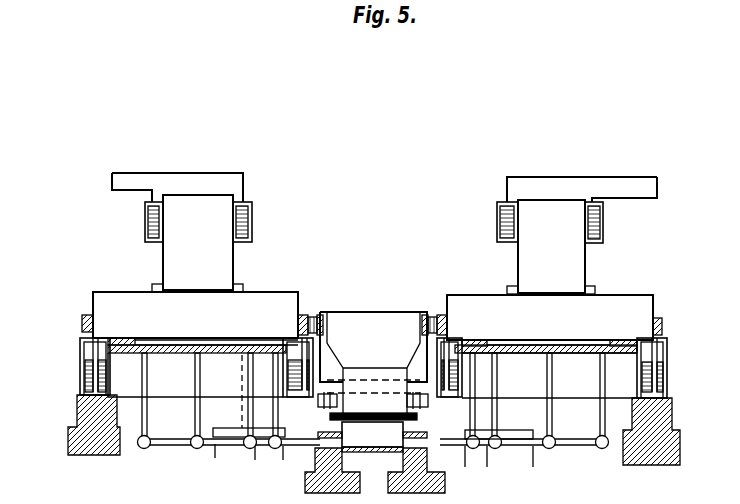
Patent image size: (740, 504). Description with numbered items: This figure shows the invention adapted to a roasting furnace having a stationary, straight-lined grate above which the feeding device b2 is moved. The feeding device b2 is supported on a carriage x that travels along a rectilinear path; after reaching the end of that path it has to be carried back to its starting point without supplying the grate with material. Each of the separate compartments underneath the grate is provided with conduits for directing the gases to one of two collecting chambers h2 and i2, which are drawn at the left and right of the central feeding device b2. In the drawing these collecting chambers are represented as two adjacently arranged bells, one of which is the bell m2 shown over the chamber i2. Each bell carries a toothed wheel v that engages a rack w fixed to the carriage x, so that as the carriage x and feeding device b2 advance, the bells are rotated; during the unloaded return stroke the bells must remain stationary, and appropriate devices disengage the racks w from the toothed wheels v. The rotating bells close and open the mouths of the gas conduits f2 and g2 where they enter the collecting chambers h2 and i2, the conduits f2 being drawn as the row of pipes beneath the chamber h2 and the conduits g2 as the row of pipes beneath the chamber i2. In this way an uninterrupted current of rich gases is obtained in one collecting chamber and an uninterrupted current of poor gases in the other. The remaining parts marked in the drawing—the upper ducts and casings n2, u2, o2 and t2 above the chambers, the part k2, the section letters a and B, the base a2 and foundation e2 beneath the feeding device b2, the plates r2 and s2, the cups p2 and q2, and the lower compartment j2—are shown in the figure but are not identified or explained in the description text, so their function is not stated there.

The inlet pipe and casing n2 is at (132, 180).
The packed joint u2 is at (252, 228).
The outlet pipe and casing o2 is at (628, 185).
The packed joint t2 is at (604, 228).
The collecting chamber h2 is at (190, 315).
The collecting chamber i2 is at (554, 317).
The cover plate k2 is at (275, 290).
The bell m2 is at (612, 294).
The section line a is at (110, 298).
The section line B is at (628, 302).
The toothed wheel v is at (306, 313).
The rack w is at (324, 314).
The feeding device b2 is at (373, 366).
The carriage x is at (327, 410).
The base block a2 is at (370, 422).
The foundation e2 is at (365, 446).
The left plate r2 is at (118, 339).
The left seal cup p2 is at (107, 382).
The left lower chamber j2 is at (153, 355).
The gas conduit f2 is at (147, 418).
The right plate s2 is at (473, 342).
The right seal cup q2 is at (667, 387).
The gas conduit g2 is at (610, 414).